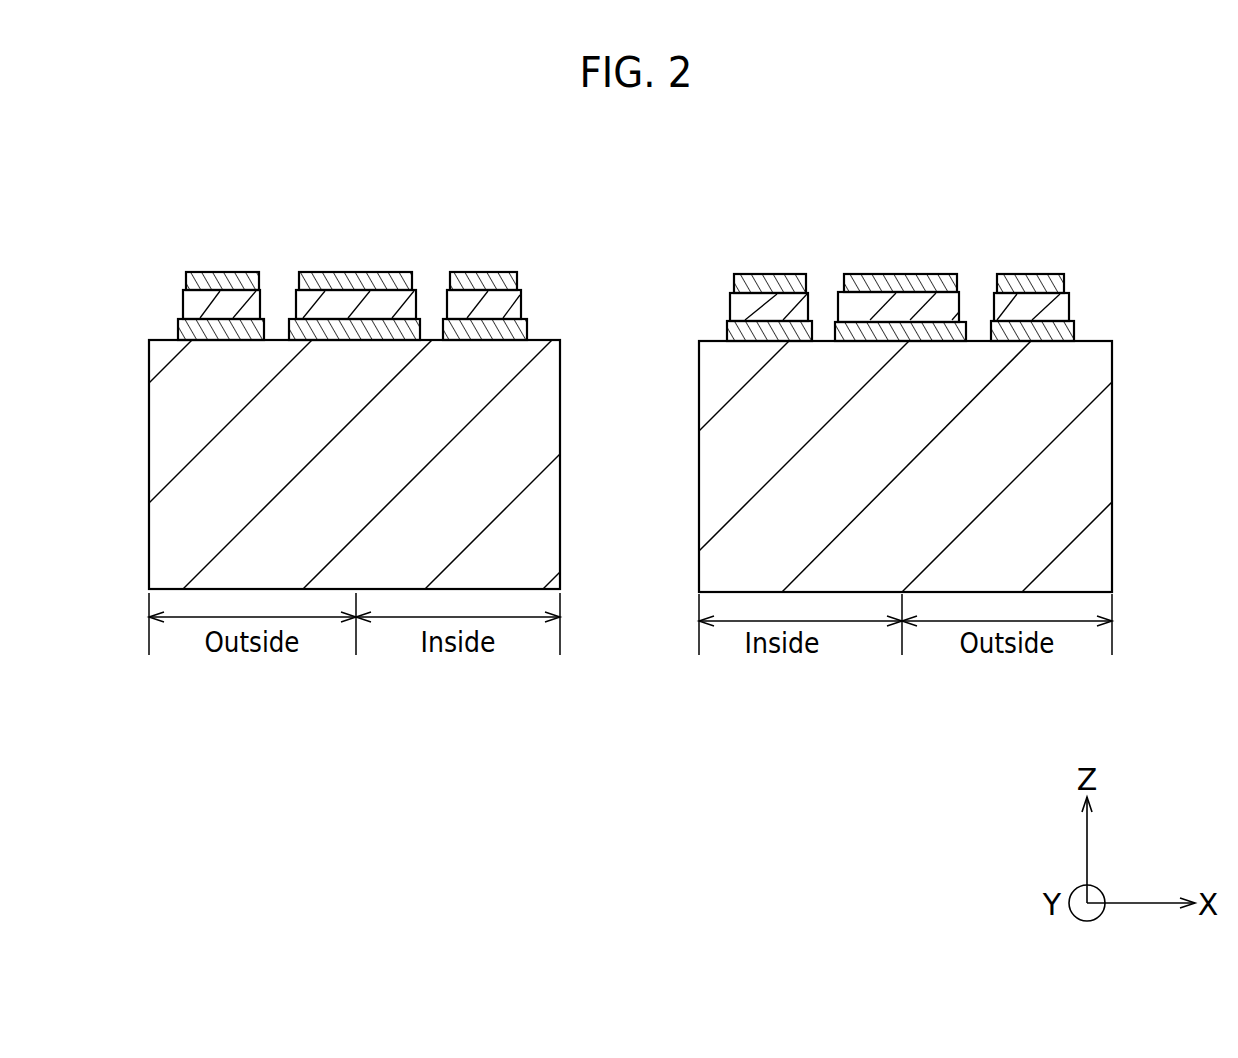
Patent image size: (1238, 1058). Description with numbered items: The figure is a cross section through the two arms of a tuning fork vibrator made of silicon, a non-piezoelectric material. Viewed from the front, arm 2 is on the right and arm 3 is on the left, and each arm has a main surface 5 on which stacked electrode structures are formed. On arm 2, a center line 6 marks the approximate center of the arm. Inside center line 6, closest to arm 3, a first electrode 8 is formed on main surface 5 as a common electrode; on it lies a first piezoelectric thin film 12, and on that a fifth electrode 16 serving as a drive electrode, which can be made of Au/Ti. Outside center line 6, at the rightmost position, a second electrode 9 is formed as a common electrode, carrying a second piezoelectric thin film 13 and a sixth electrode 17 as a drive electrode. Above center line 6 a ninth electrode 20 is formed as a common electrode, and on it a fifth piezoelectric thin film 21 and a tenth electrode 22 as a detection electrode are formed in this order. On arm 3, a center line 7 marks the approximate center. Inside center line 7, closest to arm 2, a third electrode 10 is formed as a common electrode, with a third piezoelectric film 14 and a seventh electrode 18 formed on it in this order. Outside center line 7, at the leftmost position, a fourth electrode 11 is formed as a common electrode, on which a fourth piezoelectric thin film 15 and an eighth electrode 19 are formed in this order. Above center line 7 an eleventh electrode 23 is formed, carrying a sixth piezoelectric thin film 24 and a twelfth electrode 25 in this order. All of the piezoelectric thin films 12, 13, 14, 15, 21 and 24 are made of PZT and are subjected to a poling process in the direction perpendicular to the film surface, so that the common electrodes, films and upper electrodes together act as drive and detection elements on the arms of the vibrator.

The arm 2 is at (1073, 458).
The arm 3 is at (172, 452).
The main surface 5 is at (158, 337).
The center line 6 is at (898, 665).
The center line 7 is at (350, 670).
The first electrode 8 is at (737, 332).
The second electrode 9 is at (1062, 333).
The third electrode 10 is at (517, 333).
The fourth electrode 11 is at (188, 326).
The first piezoelectric thin film 12 is at (742, 303).
The second piezoelectric thin film 13 is at (1057, 308).
The third piezoelectric film 14 is at (508, 308).
The fourth piezoelectric thin film 15 is at (193, 300).
The fifth electrode 16 is at (755, 279).
The sixth electrode 17 is at (1028, 281).
The seventh electrode 18 is at (472, 280).
The eighth electrode 19 is at (214, 278).
The ninth electrode 20 is at (858, 333).
The fifth piezoelectric thin film 21 is at (898, 310).
The tenth electrode 22 is at (932, 277).
The eleventh electrode 23 is at (308, 325).
The sixth piezoelectric thin film 24 is at (342, 308).
The twelfth electrode 25 is at (362, 280).